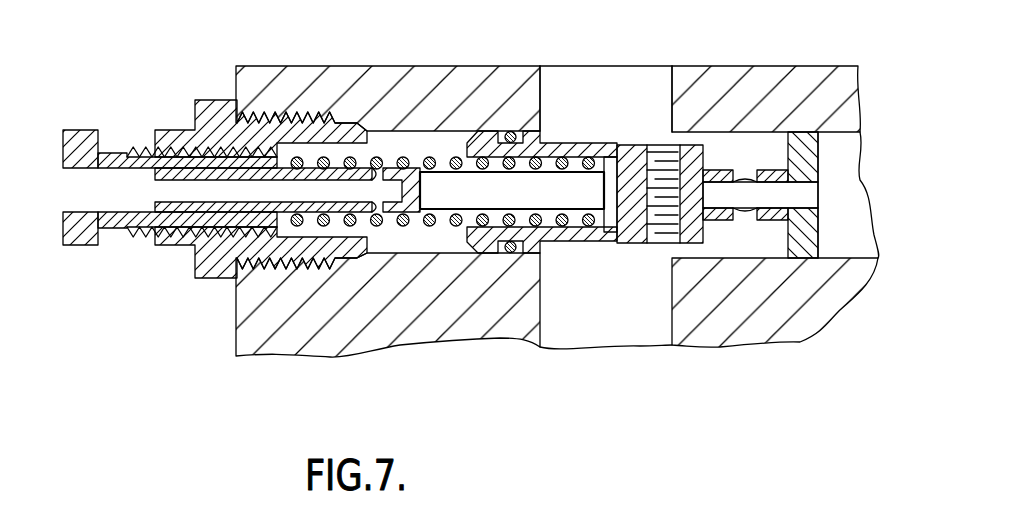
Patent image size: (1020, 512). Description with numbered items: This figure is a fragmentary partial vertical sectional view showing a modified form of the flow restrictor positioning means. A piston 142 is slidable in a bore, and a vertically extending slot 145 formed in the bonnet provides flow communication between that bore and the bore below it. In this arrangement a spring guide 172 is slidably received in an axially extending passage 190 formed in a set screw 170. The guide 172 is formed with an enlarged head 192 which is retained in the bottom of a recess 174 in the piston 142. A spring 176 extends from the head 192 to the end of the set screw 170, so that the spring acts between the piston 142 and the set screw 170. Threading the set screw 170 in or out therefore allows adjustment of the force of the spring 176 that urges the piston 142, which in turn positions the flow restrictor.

The piston 142 is at (551, 141).
The vertically extending slot 145 is at (600, 97).
The set screw 170 is at (108, 153).
The spring guide 172 is at (408, 168).
The recess 174 is at (478, 222).
The spring 176 is at (374, 222).
The axially extending passage 190 is at (222, 190).
The enlarged head 192 is at (608, 158).